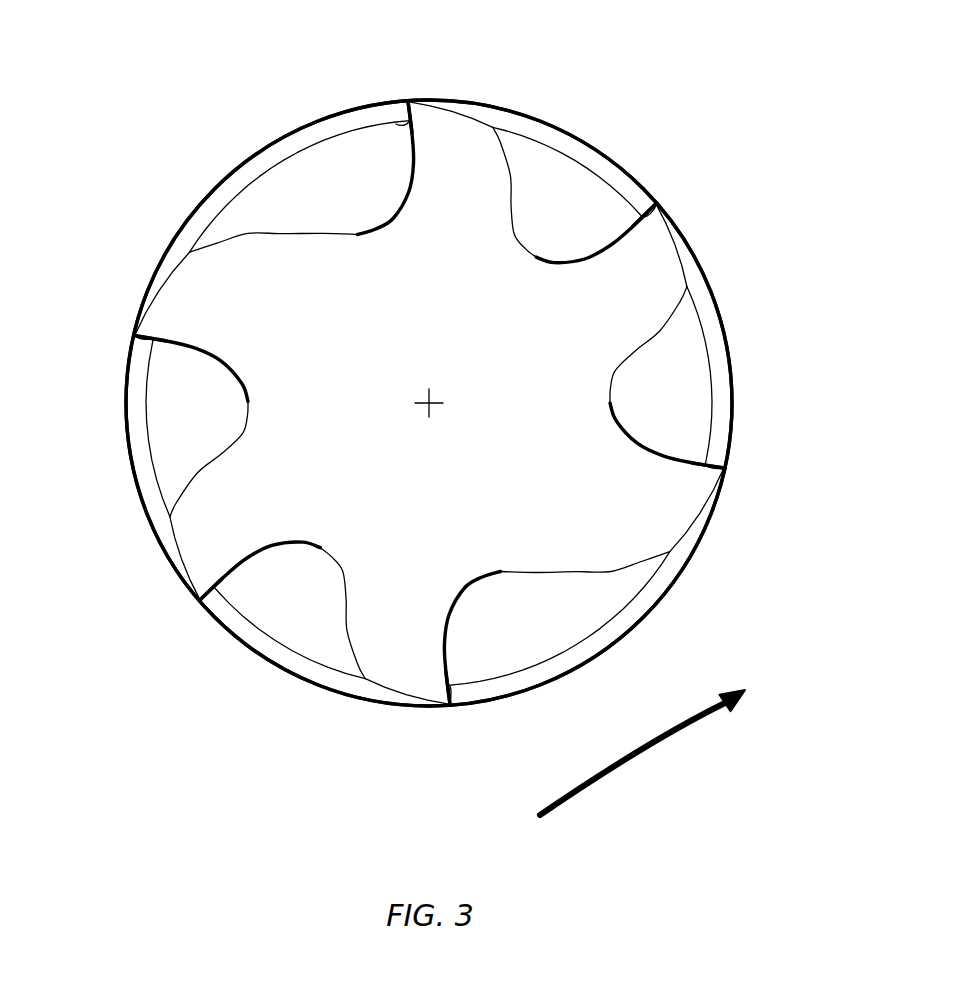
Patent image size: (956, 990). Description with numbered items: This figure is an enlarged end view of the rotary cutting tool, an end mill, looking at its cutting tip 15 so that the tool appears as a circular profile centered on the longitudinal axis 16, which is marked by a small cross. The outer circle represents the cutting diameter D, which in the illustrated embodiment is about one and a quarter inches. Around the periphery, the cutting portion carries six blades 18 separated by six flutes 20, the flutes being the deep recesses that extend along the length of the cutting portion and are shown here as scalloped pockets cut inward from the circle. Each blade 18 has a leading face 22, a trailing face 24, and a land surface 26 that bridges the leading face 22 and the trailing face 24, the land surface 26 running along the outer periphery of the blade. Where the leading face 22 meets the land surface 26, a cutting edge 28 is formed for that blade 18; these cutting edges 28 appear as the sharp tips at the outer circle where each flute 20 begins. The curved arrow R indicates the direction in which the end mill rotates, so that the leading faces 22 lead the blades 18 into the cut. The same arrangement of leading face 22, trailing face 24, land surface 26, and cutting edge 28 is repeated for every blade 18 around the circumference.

The cutting tip 15 is at (421, 512).
The longitudinal axis 16 is at (436, 397).
The blade 18 is at (422, 95).
The flute 20 is at (372, 185).
The leading face 22 is at (396, 124).
The trailing face 24 is at (243, 233).
The land surface 26 is at (445, 103).
The cutting edge 28 is at (405, 118).
The cutting diameter D is at (250, 158).
The direction of rotation R is at (655, 775).